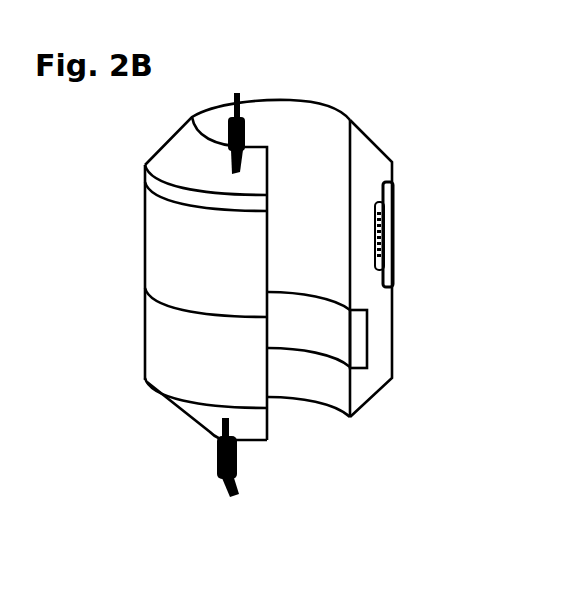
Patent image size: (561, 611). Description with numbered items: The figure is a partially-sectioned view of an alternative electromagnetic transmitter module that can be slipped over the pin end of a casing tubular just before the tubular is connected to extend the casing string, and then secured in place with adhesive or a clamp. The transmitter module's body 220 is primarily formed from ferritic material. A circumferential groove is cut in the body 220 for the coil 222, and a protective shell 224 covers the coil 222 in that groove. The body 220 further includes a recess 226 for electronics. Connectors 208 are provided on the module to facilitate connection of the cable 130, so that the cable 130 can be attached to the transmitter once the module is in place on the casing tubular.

The cable 130 is at (233, 104).
The connectors 208 is at (245, 124).
The body 220 is at (378, 170).
The coil 222 is at (390, 228).
The protective shell 224 is at (145, 228).
The recess 226 is at (323, 284).